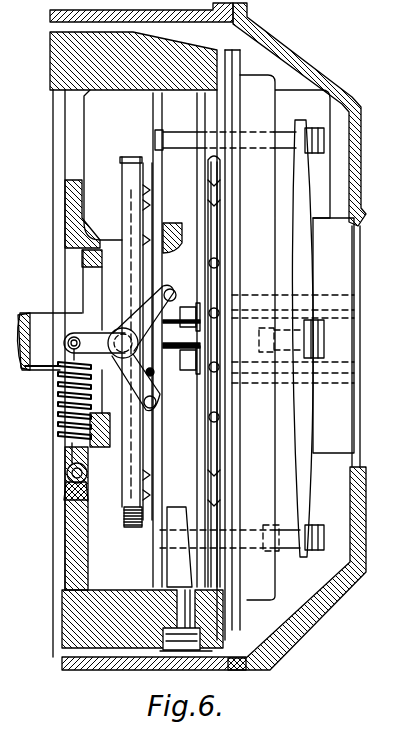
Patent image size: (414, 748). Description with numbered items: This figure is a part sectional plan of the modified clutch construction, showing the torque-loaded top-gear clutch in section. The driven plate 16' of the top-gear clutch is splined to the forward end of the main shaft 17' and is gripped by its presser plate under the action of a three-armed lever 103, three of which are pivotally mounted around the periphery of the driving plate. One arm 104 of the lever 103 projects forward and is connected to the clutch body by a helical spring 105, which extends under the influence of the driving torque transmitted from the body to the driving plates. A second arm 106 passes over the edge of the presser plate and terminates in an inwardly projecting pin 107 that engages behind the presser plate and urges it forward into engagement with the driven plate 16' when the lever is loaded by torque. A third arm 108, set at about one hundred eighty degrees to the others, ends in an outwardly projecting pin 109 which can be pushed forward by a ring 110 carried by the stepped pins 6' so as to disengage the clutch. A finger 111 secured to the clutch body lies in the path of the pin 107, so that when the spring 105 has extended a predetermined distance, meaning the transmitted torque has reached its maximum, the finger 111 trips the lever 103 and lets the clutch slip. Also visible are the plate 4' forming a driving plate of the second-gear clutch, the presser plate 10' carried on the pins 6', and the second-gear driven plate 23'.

The plate 4' is at (285, 340).
The stepped pins 6' is at (299, 342).
The ring 110 is at (162, 118).
The presser plate 10' is at (139, 165).
The finger 111 is at (177, 224).
The second-gear driven plate 23' is at (234, 371).
The inwardly projecting pin 107 is at (170, 289).
The second arm 106 is at (176, 298).
The three-armed lever 103 is at (112, 332).
The arm 104 is at (73, 332).
The helical spring 105 is at (57, 404).
The main shaft 17' is at (190, 351).
The third arm 108 is at (153, 376).
The outwardly projecting pin 109 is at (154, 406).
The driven plate 16' is at (126, 342).